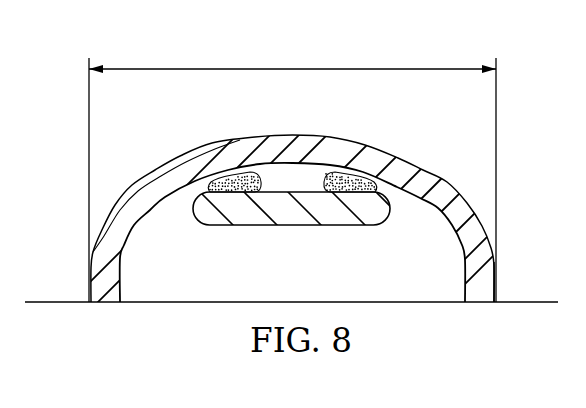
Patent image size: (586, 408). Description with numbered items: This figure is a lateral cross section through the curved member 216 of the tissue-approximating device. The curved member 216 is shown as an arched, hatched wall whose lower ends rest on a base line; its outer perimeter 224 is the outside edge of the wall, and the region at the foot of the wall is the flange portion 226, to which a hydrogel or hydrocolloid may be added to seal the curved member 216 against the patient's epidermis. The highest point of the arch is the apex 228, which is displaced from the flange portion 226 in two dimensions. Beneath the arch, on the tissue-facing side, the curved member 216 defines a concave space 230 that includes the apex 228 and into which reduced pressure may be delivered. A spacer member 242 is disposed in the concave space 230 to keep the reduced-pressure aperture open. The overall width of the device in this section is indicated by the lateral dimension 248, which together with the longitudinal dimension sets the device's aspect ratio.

The curved member 216 is at (385, 143).
The outer perimeter 224 is at (497, 283).
The flange portion 226 is at (481, 303).
The apex 228 is at (293, 134).
The concave space 230 is at (273, 275).
The spacer member 242 is at (354, 226).
The lateral dimension 248 is at (292, 68).